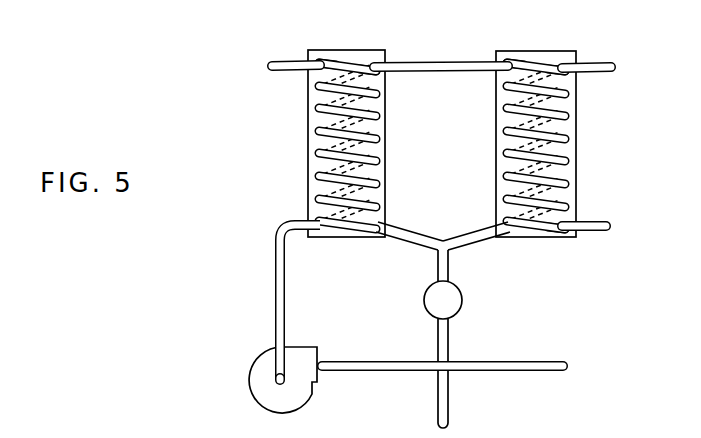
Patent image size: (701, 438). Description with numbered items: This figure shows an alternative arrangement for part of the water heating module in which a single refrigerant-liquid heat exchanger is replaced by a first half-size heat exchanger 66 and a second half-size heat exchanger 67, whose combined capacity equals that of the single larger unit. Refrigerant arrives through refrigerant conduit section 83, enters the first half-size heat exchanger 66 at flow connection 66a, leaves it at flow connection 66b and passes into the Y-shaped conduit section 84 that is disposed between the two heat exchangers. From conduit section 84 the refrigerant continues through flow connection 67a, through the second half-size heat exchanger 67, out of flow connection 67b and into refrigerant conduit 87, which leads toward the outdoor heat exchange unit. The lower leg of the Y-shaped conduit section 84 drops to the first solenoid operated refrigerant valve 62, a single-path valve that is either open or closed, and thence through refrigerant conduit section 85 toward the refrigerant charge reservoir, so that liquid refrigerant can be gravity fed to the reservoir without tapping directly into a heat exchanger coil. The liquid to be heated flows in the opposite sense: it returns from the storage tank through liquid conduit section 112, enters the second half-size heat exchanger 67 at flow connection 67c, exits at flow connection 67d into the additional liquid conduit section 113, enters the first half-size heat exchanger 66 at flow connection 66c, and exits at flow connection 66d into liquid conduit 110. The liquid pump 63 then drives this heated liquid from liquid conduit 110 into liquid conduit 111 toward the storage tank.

The first solenoid operated refrigerant valve 62 is at (463, 302).
The liquid pump 63 is at (262, 362).
The first half-size heat exchanger 66 is at (306, 147).
The flow connection 66a is at (321, 52).
The flow connection 66b is at (374, 238).
The flow connection 66c is at (376, 58).
The flow connection 66d is at (318, 238).
The second half-size heat exchanger 67 is at (496, 150).
The flow connection 67a is at (507, 238).
The flow connection 67b is at (564, 61).
The flow connection 67c is at (567, 238).
The flow connection 67d is at (507, 61).
The refrigerant conduit section 83 is at (284, 62).
The conduit section 84 is at (442, 243).
The refrigerant conduit section 85 is at (447, 417).
The refrigerant conduit 87 is at (608, 62).
The liquid conduit 110 is at (285, 315).
The liquid conduit 111 is at (367, 372).
The liquid conduit section 112 is at (602, 221).
The liquid conduit section 113 is at (440, 61).